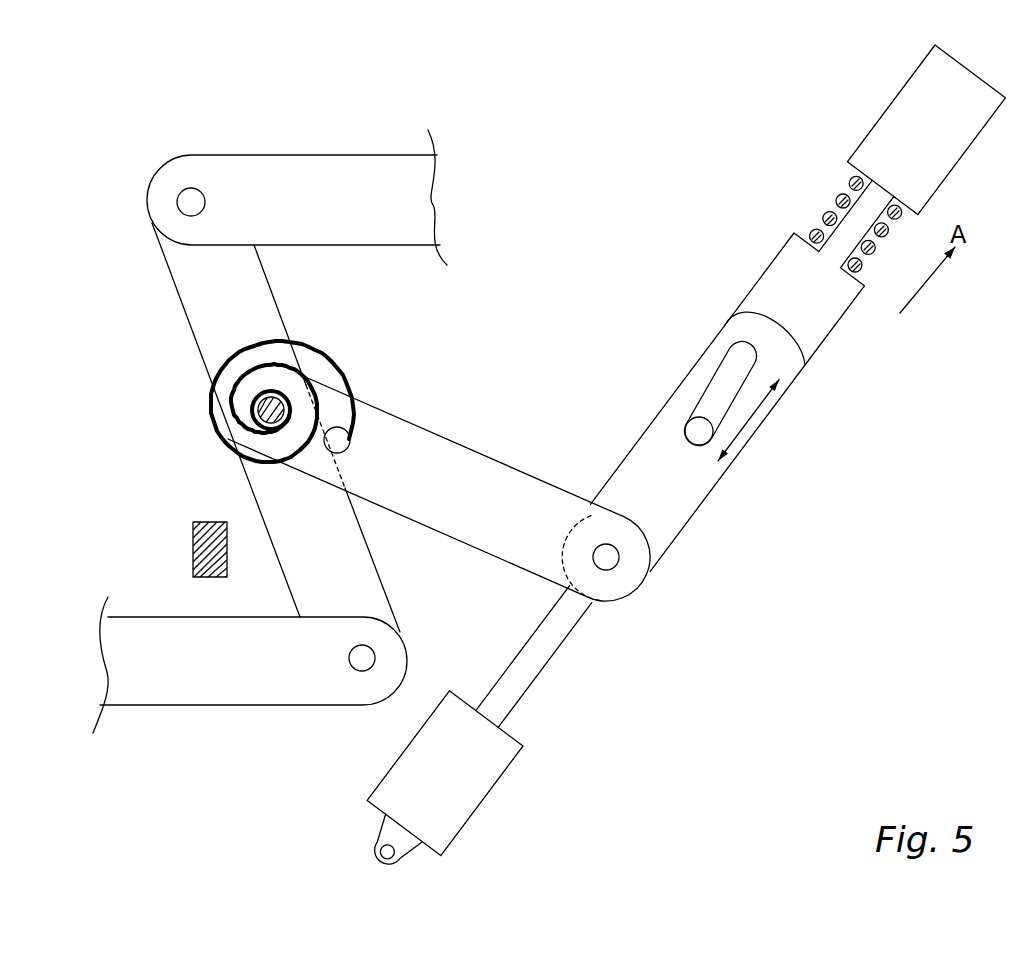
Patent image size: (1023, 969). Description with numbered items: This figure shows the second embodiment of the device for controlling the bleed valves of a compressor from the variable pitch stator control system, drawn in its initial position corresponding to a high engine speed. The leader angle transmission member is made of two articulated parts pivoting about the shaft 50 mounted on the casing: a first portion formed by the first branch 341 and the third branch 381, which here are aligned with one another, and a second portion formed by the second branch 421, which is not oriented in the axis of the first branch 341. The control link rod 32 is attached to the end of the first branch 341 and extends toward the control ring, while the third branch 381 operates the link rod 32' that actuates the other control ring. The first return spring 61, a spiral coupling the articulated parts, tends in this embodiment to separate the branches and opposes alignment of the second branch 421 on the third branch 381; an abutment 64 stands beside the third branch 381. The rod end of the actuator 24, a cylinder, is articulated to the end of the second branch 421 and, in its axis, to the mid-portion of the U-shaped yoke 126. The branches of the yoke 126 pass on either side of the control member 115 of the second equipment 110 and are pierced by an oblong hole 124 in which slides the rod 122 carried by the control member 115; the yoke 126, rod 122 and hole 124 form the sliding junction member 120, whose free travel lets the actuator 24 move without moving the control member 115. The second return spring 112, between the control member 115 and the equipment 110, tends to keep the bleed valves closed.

The actuator 24 is at (478, 777).
The control link rod 32 is at (297, 168).
The link rod 32' is at (250, 679).
The shaft 50 is at (265, 410).
The first return spring 61 is at (333, 352).
The abutment 64 is at (207, 548).
The second variable-geometry equipment 110 is at (933, 122).
The second return spring 112 is at (823, 217).
The control member 115 is at (787, 311).
The sliding junction member 120 is at (612, 309).
The rod 122 is at (697, 432).
The oblong hole 124 is at (742, 375).
The yoke 126 is at (665, 478).
The first branch 341 is at (213, 296).
The third branch 381 is at (358, 583).
The second branch 421 is at (465, 473).